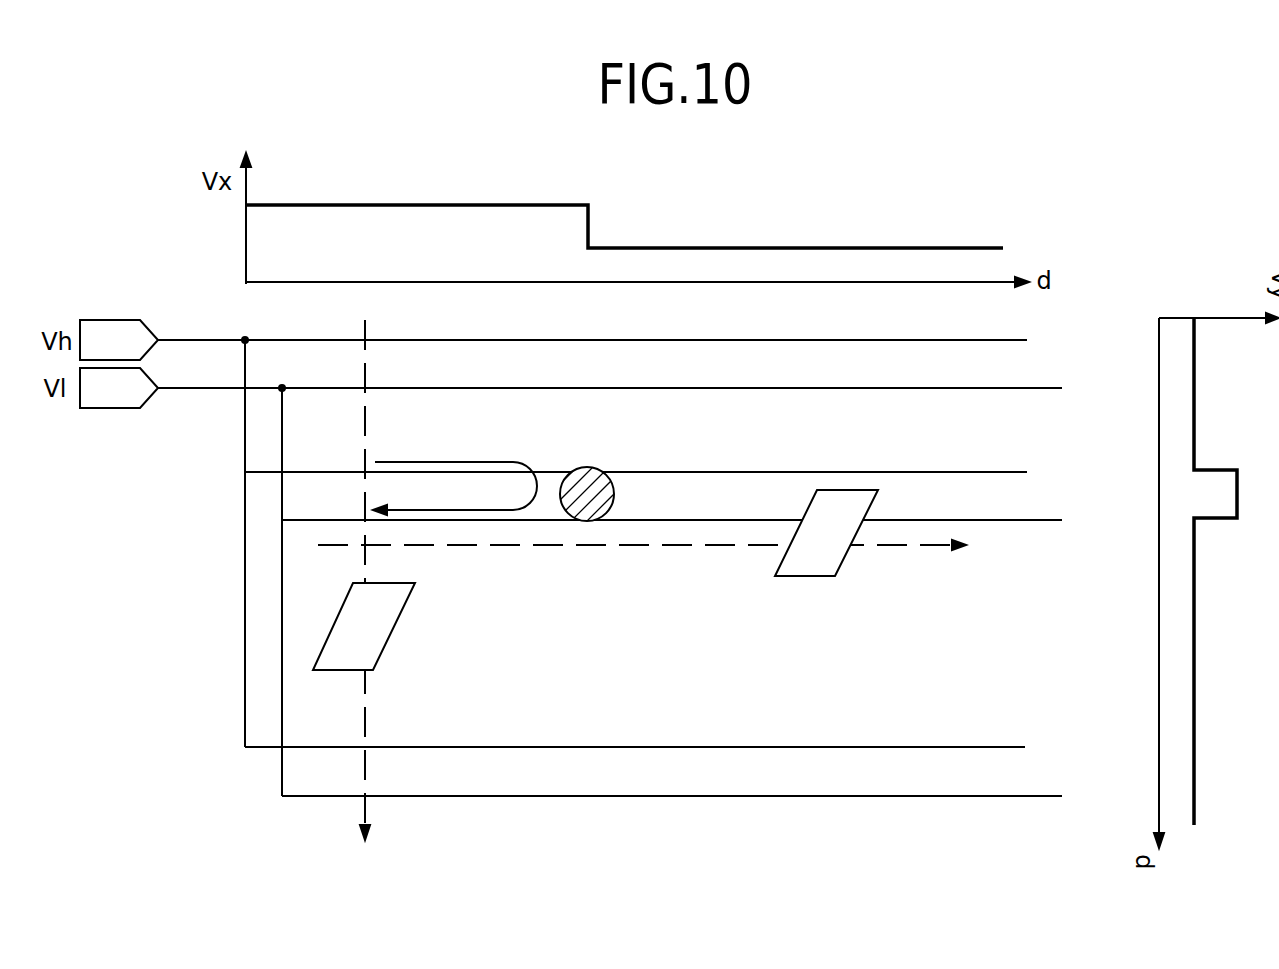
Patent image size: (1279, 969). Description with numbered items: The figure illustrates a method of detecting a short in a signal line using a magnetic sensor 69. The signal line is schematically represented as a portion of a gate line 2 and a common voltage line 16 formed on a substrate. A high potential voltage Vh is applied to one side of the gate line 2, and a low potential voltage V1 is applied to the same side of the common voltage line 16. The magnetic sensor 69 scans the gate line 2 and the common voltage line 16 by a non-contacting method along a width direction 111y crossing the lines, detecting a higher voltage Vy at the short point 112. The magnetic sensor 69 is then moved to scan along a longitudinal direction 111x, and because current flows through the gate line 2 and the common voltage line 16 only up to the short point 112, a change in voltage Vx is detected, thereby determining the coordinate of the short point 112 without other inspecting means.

The gate line 2 is at (932, 339).
The common voltage line 16 is at (932, 387).
The magnetic sensor 69 is at (397, 627).
The short point 112 is at (597, 521).
The longitudinal direction 111x is at (675, 547).
The width direction 111y is at (367, 598).